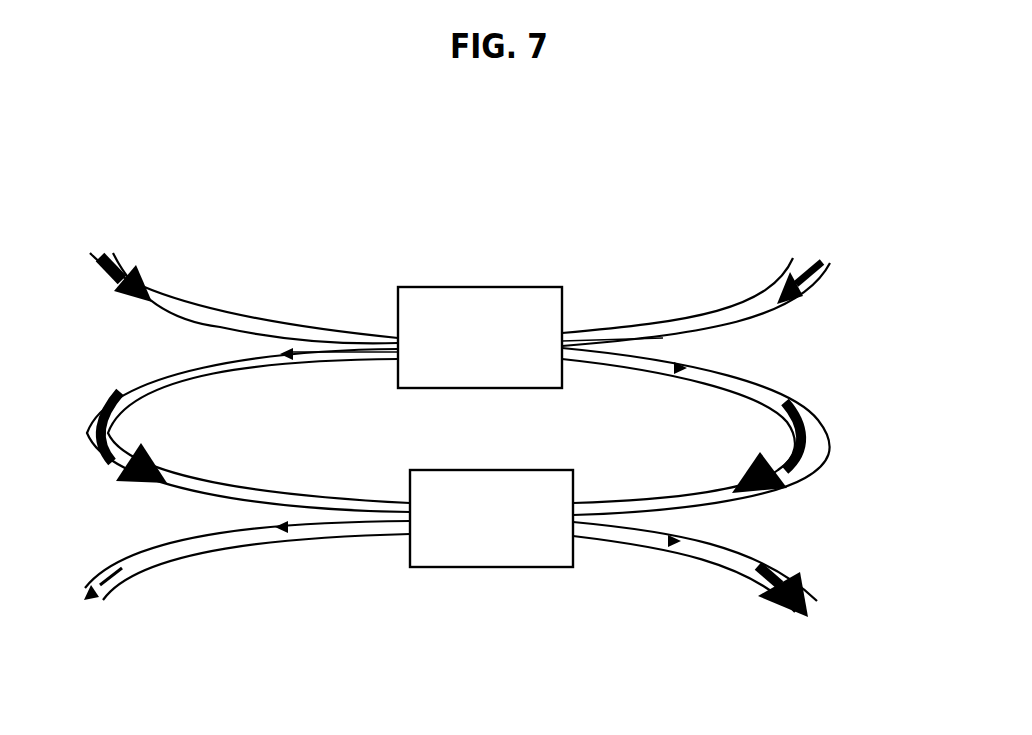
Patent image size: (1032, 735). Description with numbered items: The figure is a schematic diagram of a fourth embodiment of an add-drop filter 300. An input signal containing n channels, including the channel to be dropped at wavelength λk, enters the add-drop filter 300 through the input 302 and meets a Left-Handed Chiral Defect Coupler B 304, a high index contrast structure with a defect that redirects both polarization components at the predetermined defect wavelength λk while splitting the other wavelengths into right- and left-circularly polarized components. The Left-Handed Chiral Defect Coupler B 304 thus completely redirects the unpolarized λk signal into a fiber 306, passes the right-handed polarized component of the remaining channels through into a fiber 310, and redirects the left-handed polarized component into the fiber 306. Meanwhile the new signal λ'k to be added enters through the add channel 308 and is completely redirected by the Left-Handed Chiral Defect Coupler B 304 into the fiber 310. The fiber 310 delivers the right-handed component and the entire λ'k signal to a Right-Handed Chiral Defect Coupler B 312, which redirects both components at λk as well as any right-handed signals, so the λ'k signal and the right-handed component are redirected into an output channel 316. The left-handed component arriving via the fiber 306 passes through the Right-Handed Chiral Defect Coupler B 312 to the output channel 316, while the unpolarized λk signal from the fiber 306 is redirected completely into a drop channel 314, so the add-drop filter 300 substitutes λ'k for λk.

The add-drop filter 300 is at (507, 200).
The input 302 is at (192, 300).
The Left-Handed Chiral Defect Coupler B 304 is at (472, 287).
The fiber 306 is at (203, 381).
The add channel 308 is at (680, 314).
The fiber 310 is at (747, 377).
The Right-Handed Chiral Defect Coupler B 312 is at (480, 567).
The drop channel 314 is at (213, 547).
The output channel 316 is at (730, 541).